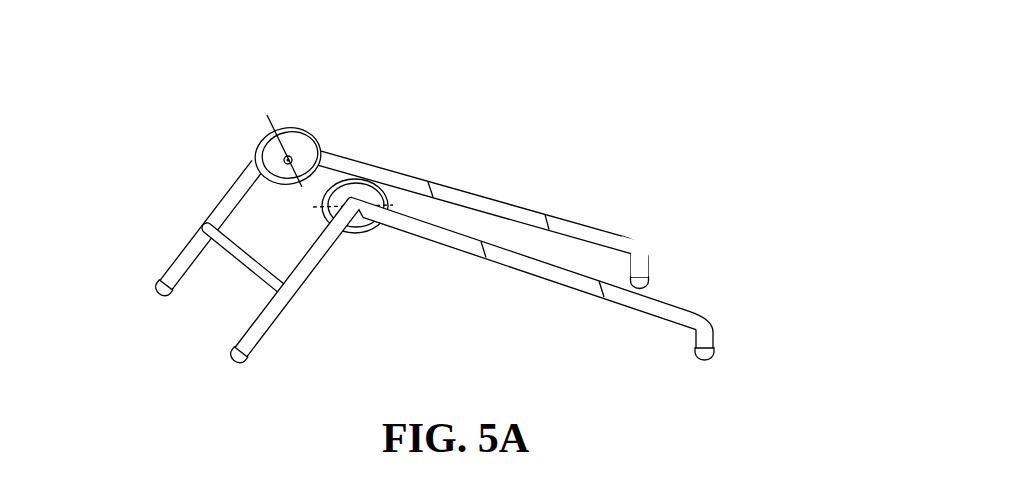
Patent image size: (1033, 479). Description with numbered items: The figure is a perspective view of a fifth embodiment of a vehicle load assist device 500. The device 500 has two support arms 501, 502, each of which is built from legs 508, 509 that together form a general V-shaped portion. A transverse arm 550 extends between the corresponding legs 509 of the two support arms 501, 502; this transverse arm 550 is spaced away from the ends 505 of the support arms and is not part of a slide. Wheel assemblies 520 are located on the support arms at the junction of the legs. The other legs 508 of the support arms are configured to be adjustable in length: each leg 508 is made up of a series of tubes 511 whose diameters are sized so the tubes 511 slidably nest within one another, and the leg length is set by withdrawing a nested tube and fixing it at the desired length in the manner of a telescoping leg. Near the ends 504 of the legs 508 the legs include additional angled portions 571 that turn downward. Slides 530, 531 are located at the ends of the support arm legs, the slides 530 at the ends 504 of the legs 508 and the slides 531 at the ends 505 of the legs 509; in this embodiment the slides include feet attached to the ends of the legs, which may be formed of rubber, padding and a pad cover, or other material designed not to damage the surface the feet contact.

The vehicle load assist device 500 is at (516, 72).
The support arm 501 is at (237, 181).
The support arm 502 is at (433, 240).
The end of leg 504 is at (692, 272).
The end of support arm 505 is at (155, 308).
The leg 508 is at (518, 180).
The leg 509 is at (160, 256).
The tube 511 is at (429, 182).
The wheel assembly 520 is at (353, 206).
The slide 530 is at (650, 278).
The slide 531 is at (157, 286).
The transverse arm 550 is at (248, 256).
The angled portion 571 is at (668, 240).